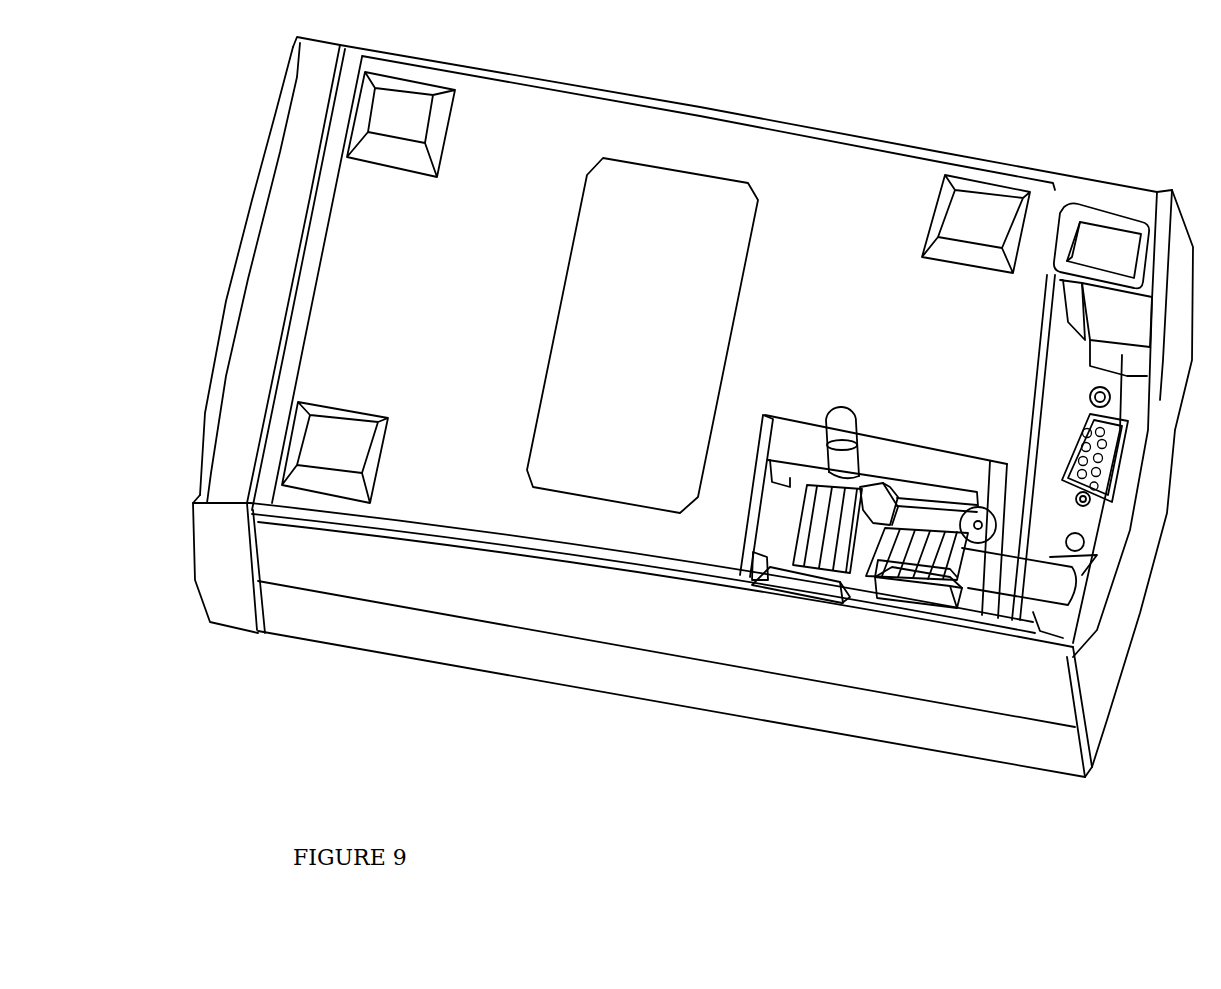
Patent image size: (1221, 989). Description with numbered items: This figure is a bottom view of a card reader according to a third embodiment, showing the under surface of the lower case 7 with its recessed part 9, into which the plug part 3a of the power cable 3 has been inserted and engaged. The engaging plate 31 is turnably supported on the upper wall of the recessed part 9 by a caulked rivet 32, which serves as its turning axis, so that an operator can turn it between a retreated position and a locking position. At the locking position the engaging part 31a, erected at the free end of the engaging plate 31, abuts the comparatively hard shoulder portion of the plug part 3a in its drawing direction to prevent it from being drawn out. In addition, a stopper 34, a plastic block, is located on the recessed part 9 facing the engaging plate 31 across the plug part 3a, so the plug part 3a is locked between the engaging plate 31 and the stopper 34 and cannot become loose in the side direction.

The lower case 7 is at (645, 530).
The recessed part 9 is at (799, 470).
The plug part 3a is at (903, 593).
The engaging part 31a is at (877, 487).
The engaging plate 31 is at (938, 522).
The rivet 32 is at (985, 502).
The stopper 34 is at (935, 595).
The power cable 3 is at (1035, 580).